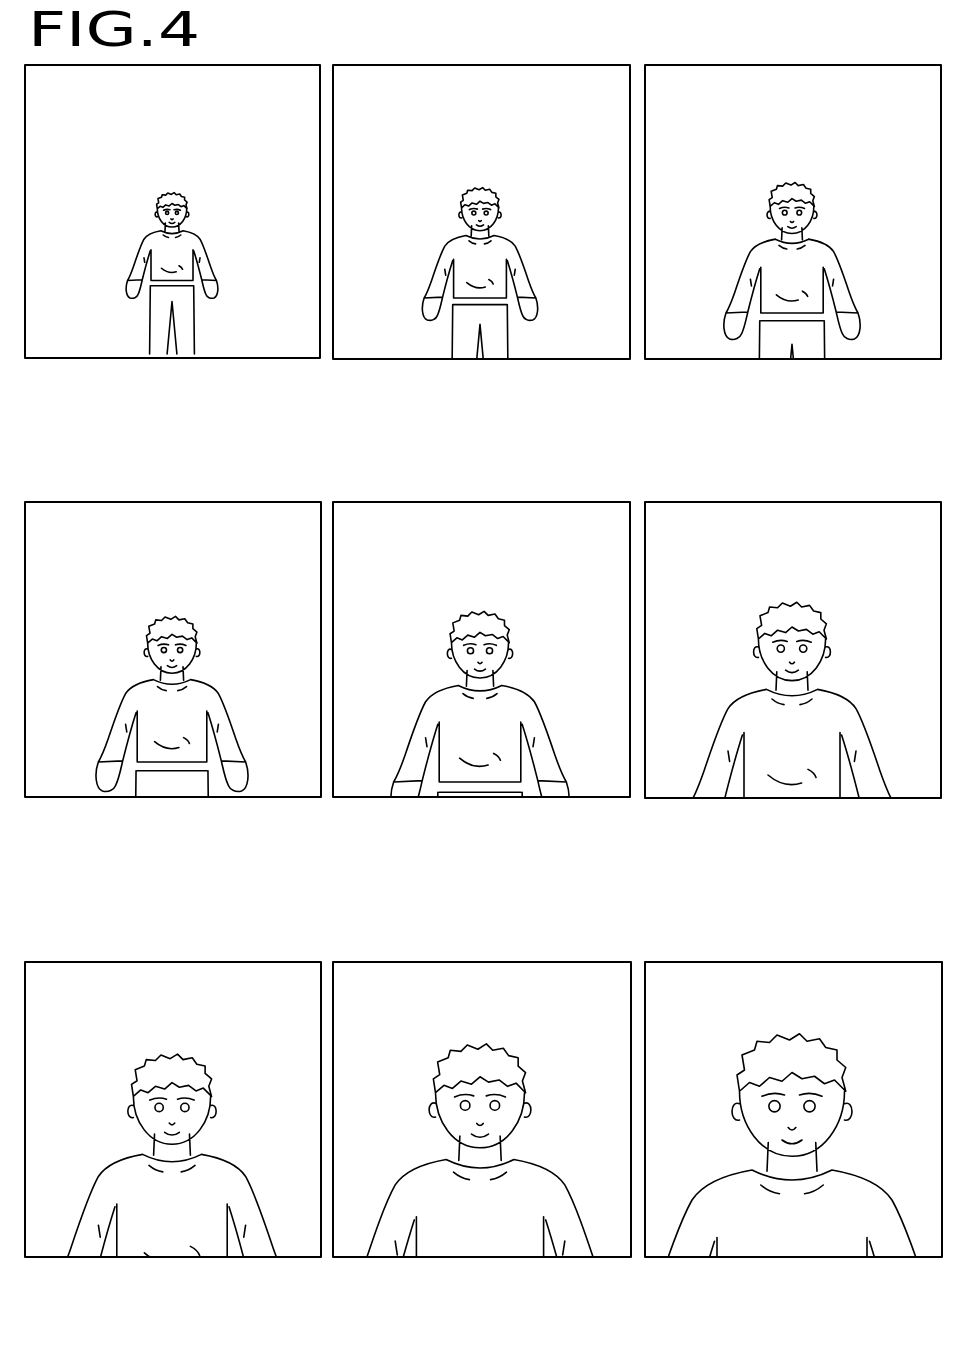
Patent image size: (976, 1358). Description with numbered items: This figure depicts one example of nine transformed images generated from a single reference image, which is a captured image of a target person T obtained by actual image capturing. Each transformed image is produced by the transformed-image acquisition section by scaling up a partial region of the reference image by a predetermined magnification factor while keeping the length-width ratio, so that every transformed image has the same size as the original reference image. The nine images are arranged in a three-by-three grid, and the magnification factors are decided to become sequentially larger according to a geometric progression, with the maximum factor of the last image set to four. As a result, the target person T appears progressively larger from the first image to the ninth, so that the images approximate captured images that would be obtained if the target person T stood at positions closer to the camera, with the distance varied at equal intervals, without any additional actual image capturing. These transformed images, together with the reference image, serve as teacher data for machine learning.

The target person T is at (148, 332).